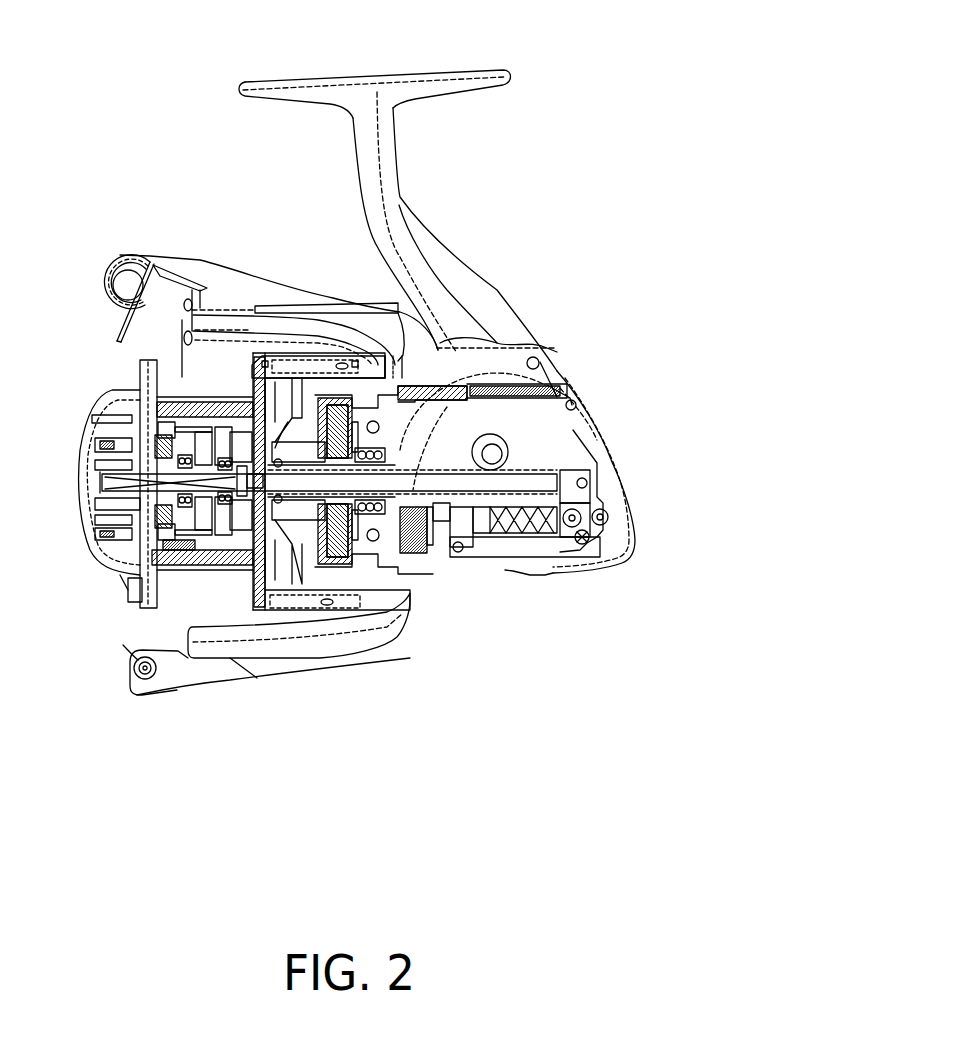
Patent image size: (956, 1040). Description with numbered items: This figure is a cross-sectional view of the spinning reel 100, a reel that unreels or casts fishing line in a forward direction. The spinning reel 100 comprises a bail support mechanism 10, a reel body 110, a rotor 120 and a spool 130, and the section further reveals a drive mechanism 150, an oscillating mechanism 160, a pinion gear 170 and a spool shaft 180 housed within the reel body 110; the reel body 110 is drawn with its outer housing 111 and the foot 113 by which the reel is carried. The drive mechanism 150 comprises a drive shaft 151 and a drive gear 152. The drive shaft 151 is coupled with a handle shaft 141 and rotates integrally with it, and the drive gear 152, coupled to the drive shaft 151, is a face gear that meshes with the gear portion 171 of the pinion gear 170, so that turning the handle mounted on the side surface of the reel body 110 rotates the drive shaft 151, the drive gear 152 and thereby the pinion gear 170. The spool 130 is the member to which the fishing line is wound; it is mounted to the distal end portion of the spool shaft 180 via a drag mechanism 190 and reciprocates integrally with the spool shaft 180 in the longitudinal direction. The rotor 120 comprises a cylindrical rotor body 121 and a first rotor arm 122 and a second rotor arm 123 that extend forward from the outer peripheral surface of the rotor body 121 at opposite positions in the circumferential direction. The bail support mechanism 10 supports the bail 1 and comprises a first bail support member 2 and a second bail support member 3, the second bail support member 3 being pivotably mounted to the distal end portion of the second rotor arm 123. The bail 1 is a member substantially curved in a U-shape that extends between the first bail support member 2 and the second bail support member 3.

The bail 1 is at (117, 340).
The first bail support member 2 is at (203, 264).
The second bail support member 3 is at (190, 688).
The bail support mechanism 10 is at (110, 250).
The spinning reel 100 is at (540, 173).
The reel body 110 is at (487, 268).
The body housing 111 is at (515, 303).
The reel foot 113 is at (457, 69).
The rotor 120 is at (323, 283).
The rotor body 121 is at (310, 375).
The first rotor arm 122 is at (363, 305).
The second rotor arm 123 is at (330, 667).
The spool 130 is at (193, 399).
The handle shaft 141 is at (502, 454).
The drive mechanism 150 is at (573, 437).
The drive shaft 151 is at (510, 437).
The drive gear 152 is at (585, 427).
The oscillating mechanism 160 is at (553, 545).
The pinion gear 170 is at (413, 488).
The gear portion 171 is at (432, 510).
The spool shaft 180 is at (520, 485).
The drag mechanism 190 is at (185, 535).